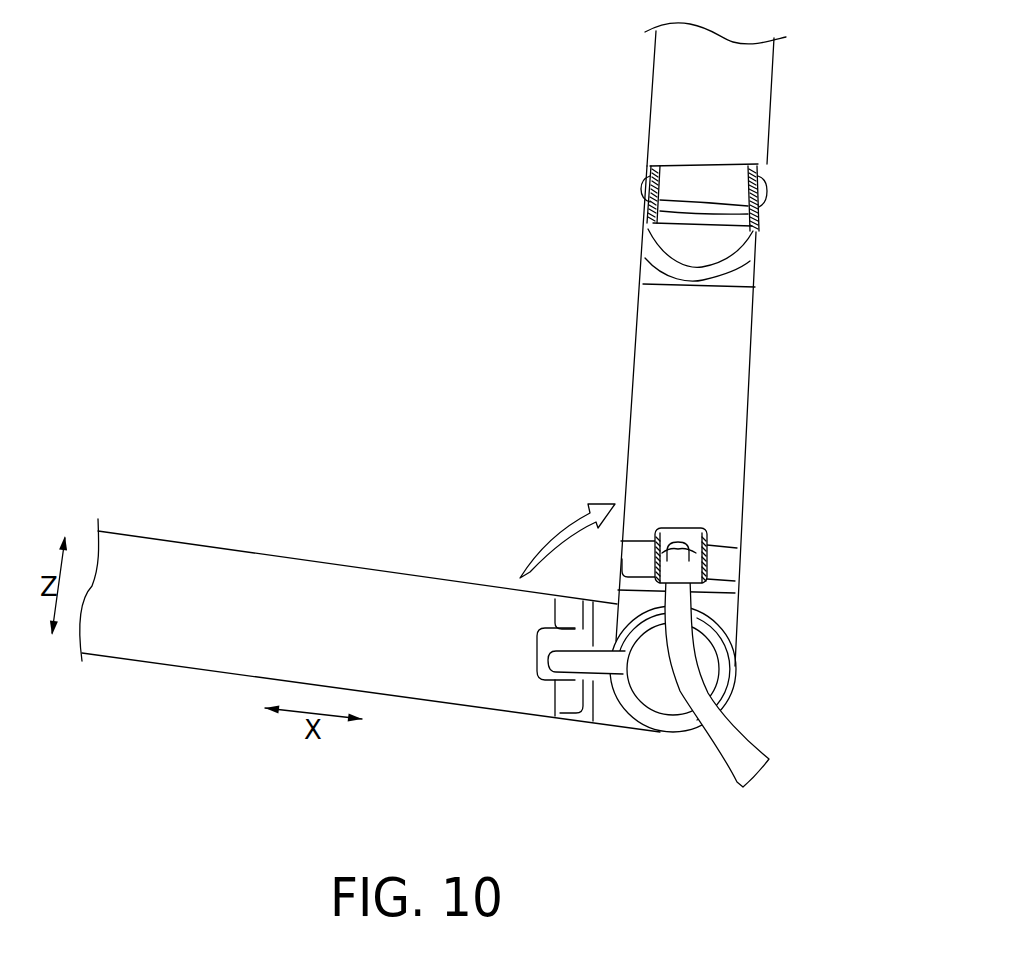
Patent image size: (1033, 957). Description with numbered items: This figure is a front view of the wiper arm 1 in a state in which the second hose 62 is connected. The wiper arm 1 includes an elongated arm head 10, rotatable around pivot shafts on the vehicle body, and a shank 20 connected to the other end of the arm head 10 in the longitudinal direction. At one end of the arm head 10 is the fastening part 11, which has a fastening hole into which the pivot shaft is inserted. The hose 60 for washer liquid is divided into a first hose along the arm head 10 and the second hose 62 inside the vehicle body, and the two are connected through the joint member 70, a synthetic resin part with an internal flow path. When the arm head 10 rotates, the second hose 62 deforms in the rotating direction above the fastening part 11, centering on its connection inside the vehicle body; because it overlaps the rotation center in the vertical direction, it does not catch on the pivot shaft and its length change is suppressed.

The wiper arm 1 is at (454, 415).
The arm head 10 is at (613, 410).
The fastening part 11 is at (668, 733).
The shank 20 is at (636, 128).
The hose 60 is at (746, 668).
The second hose 62 is at (733, 738).
The joint member 70 is at (682, 536).